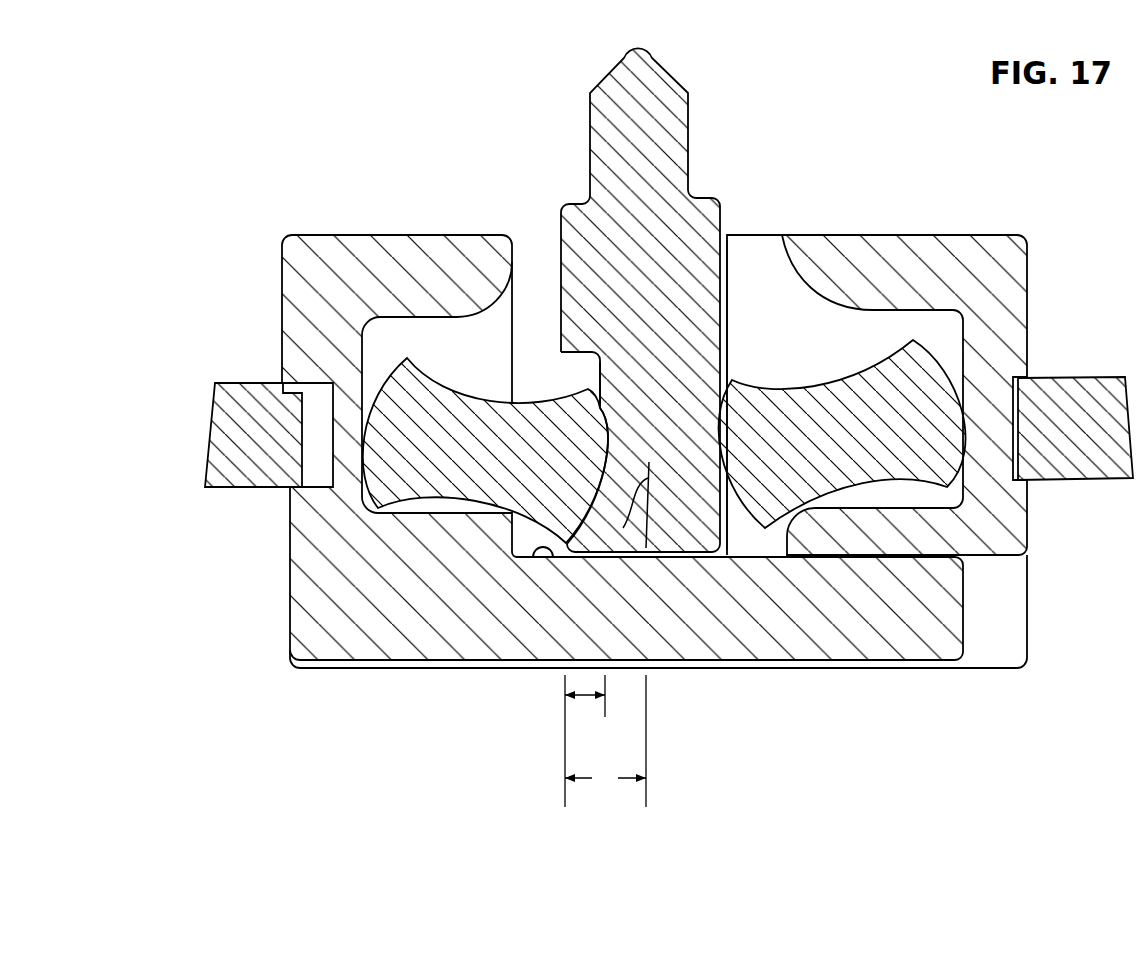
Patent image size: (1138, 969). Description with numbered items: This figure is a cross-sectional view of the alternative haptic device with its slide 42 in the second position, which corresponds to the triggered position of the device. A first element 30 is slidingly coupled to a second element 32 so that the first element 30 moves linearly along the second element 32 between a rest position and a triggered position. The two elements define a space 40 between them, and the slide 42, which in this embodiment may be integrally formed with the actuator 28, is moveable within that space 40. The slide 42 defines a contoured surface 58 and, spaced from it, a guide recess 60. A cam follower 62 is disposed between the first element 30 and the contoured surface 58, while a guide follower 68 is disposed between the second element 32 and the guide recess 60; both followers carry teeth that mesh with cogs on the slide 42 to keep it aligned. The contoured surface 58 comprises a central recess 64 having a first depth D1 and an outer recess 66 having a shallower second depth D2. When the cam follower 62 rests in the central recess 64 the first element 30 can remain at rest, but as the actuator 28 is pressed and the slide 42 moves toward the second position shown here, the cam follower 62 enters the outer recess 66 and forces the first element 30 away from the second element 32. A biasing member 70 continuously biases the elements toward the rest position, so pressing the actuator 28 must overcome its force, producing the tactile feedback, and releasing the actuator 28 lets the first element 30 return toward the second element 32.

The actuator 28 is at (655, 83).
The first element 30 is at (298, 252).
The second element 32 is at (1002, 250).
The space 40 is at (531, 558).
The slide 42 is at (703, 220).
The contoured surface 58 is at (573, 357).
The guide recess 60 is at (725, 360).
The cam follower 62 is at (469, 406).
The central recess 64 is at (623, 528).
The outer recess 66 is at (600, 374).
The guide follower 68 is at (857, 393).
The biasing member 70 is at (230, 473).
The first depth D1 is at (605, 741).
The second depth D2 is at (582, 699).